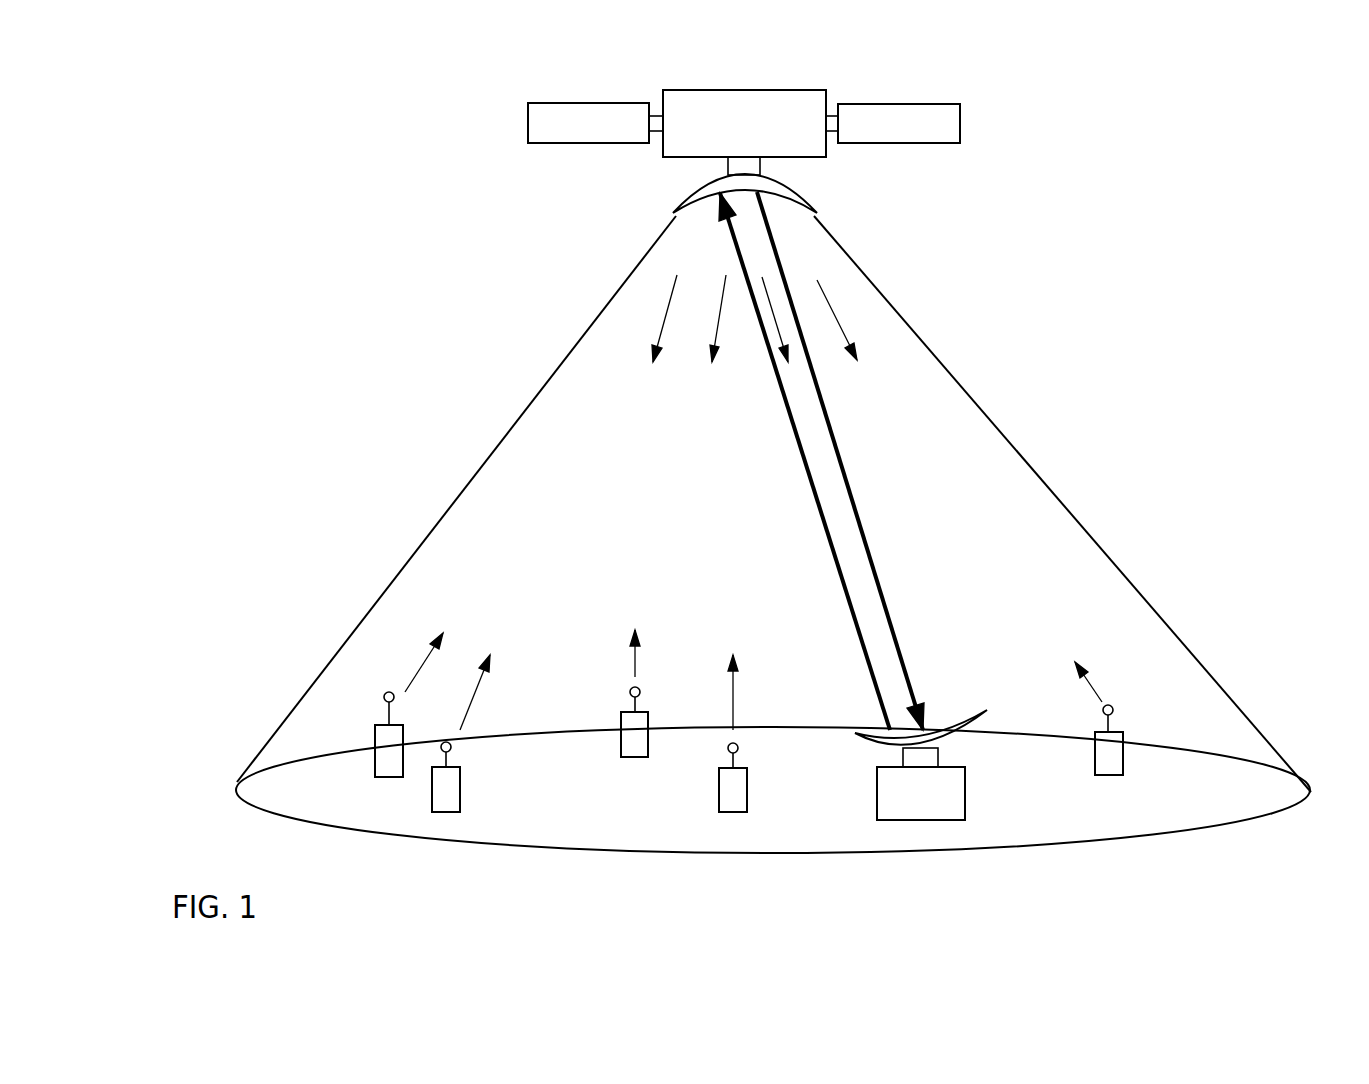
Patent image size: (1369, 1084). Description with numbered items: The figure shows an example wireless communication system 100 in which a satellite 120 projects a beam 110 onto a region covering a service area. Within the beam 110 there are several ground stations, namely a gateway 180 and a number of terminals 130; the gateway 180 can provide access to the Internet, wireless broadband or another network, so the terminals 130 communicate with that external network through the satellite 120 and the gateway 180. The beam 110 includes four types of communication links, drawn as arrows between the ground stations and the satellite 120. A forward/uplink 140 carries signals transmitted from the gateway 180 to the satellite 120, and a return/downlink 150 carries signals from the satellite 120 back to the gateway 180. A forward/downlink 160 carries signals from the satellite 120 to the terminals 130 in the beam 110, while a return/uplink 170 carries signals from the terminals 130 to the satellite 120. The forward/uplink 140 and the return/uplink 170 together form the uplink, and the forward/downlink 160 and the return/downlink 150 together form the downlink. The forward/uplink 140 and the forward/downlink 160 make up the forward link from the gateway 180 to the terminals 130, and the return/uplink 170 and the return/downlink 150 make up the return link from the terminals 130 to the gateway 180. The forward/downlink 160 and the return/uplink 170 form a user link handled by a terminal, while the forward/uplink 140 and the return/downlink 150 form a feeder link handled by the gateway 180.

The wireless communication system 100 is at (1237, 191).
The beam 110 is at (1263, 778).
The satellite 120 is at (916, 103).
The terminals 130 is at (387, 777).
The forward/uplink 140 is at (838, 568).
The return/downlink 150 is at (906, 598).
The forward/downlink 160 is at (667, 305).
The return/uplink 170 is at (410, 667).
The gateway 180 is at (940, 820).